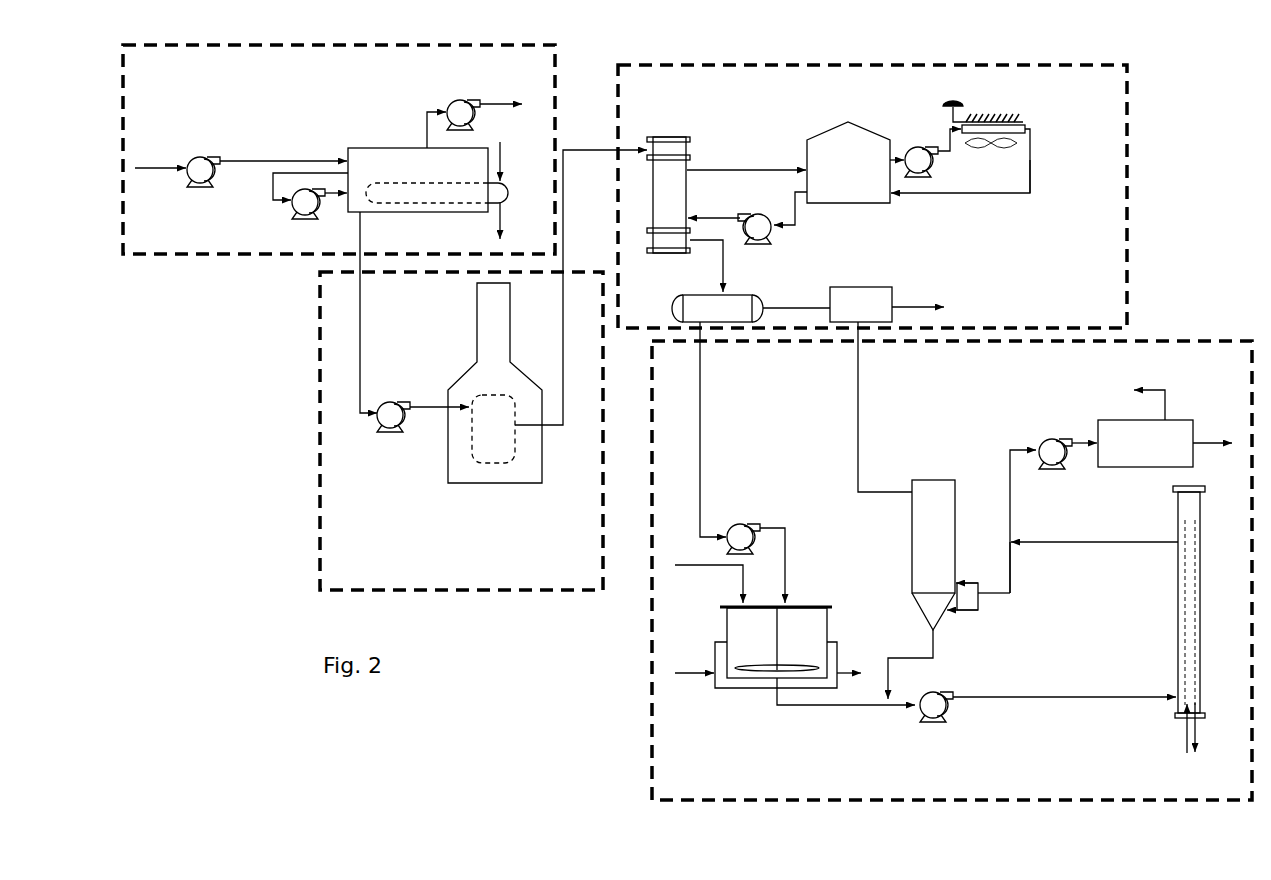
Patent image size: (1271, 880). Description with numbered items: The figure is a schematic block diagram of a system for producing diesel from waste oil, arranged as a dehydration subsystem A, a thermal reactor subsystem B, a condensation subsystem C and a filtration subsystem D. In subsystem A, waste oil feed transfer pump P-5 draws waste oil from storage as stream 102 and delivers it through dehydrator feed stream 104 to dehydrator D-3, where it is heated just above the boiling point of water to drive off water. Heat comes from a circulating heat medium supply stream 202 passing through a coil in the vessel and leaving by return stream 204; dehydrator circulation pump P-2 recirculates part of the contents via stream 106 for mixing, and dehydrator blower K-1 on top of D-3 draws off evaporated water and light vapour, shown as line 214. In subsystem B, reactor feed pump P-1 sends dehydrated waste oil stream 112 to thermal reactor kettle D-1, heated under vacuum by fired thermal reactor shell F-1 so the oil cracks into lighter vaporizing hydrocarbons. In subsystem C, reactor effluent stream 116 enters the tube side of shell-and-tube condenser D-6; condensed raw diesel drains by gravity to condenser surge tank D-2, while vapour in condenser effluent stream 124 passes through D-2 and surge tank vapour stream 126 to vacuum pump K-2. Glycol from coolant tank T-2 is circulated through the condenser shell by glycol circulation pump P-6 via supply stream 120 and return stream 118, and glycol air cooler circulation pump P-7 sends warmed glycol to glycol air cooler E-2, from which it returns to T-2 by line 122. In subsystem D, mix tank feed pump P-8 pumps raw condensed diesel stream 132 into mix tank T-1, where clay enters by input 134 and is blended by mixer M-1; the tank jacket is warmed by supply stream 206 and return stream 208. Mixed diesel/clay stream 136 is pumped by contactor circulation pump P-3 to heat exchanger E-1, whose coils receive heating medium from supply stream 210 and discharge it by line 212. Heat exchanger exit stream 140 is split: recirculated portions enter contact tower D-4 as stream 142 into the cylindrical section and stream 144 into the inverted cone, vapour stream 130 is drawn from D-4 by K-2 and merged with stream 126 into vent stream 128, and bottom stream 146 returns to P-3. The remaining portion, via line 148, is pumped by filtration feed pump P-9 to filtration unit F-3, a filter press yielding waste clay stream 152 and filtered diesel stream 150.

The waste oil feed stream 102 is at (156, 149).
The waste oil dehydrator feed stream 104 is at (263, 154).
The dehydrator circulation stream 106 is at (263, 195).
The dehydrated waste oil stream 112 is at (368, 298).
The reactor effluent stream 116 is at (557, 430).
The glycol return stream 118 is at (760, 162).
The glycol supply stream 120 is at (802, 212).
The return stream from E-2 to T-2 122 is at (995, 203).
The condenser effluent stream 124 is at (715, 275).
The surge tank vapour stream 126 is at (797, 300).
The total vapour vent stream 128 is at (925, 298).
The hydrocarbon vapour stream 130 is at (850, 400).
The raw condensed diesel stream 132 is at (705, 425).
The clay input 134 is at (705, 568).
The mixed diesel/clay stream 136 is at (790, 712).
The heat exchanger exit stream 140 is at (1060, 548).
The recirculation stream to cylindrical section 142 is at (977, 578).
The recirculation stream to inverted cone section 144 is at (968, 615).
The contactor tower bottom stream 146 is at (915, 655).
The stream from D-4 to P-9 148 is at (1002, 480).
The filtered diesel stream 150 is at (1220, 438).
The waste clay stream 152 is at (1153, 385).
The Dowtherm supply stream 202 is at (522, 163).
The Dowtherm return stream 204 is at (490, 228).
The Dowtherm supply stream 206 is at (688, 685).
The Dowtherm return stream 208 is at (855, 665).
The Dowtherm supply stream 210 is at (1143, 730).
The coolant outlet from E-1 212 is at (1202, 740).
The vapor stream from D-3 to K-1 214 is at (422, 127).
The waste oil feed transfer pump P-5 is at (203, 142).
The dehydrator circulation pump P-2 is at (283, 210).
The reactor feed pump P-1 is at (370, 437).
The glycol circulation pump P-6 is at (758, 217).
The glycol air cooler circulation pump P-7 is at (915, 143).
The mix tank feed pump P-8 is at (743, 518).
The filtration feed pump P-9 is at (1065, 473).
The contactor circulation pump P-3 is at (952, 713).
The dehydrator D-3 is at (372, 142).
The thermal reactor kettle D-1 is at (465, 445).
The condenser D-6 is at (661, 130).
The condenser surge tank D-2 is at (753, 297).
The contact tower D-4 is at (907, 531).
The dehydrator blower K-1 is at (450, 93).
The vacuum pump K-2 is at (868, 283).
The fired thermal reactor shell F-1 is at (477, 490).
The filtration unit F-3 is at (1123, 472).
The mix tank T-1 is at (722, 630).
The coolant tank T-2 is at (832, 125).
The mixer M-1 is at (777, 652).
The heat exchanger E-1 is at (1173, 612).
The glycol air cooler E-2 is at (999, 110).
The dehydration subsystem A is at (339, 149).
The thermal reactor subsystem B is at (461, 431).
The condensation subsystem C is at (872, 196).
The filtration subsystem D is at (952, 570).